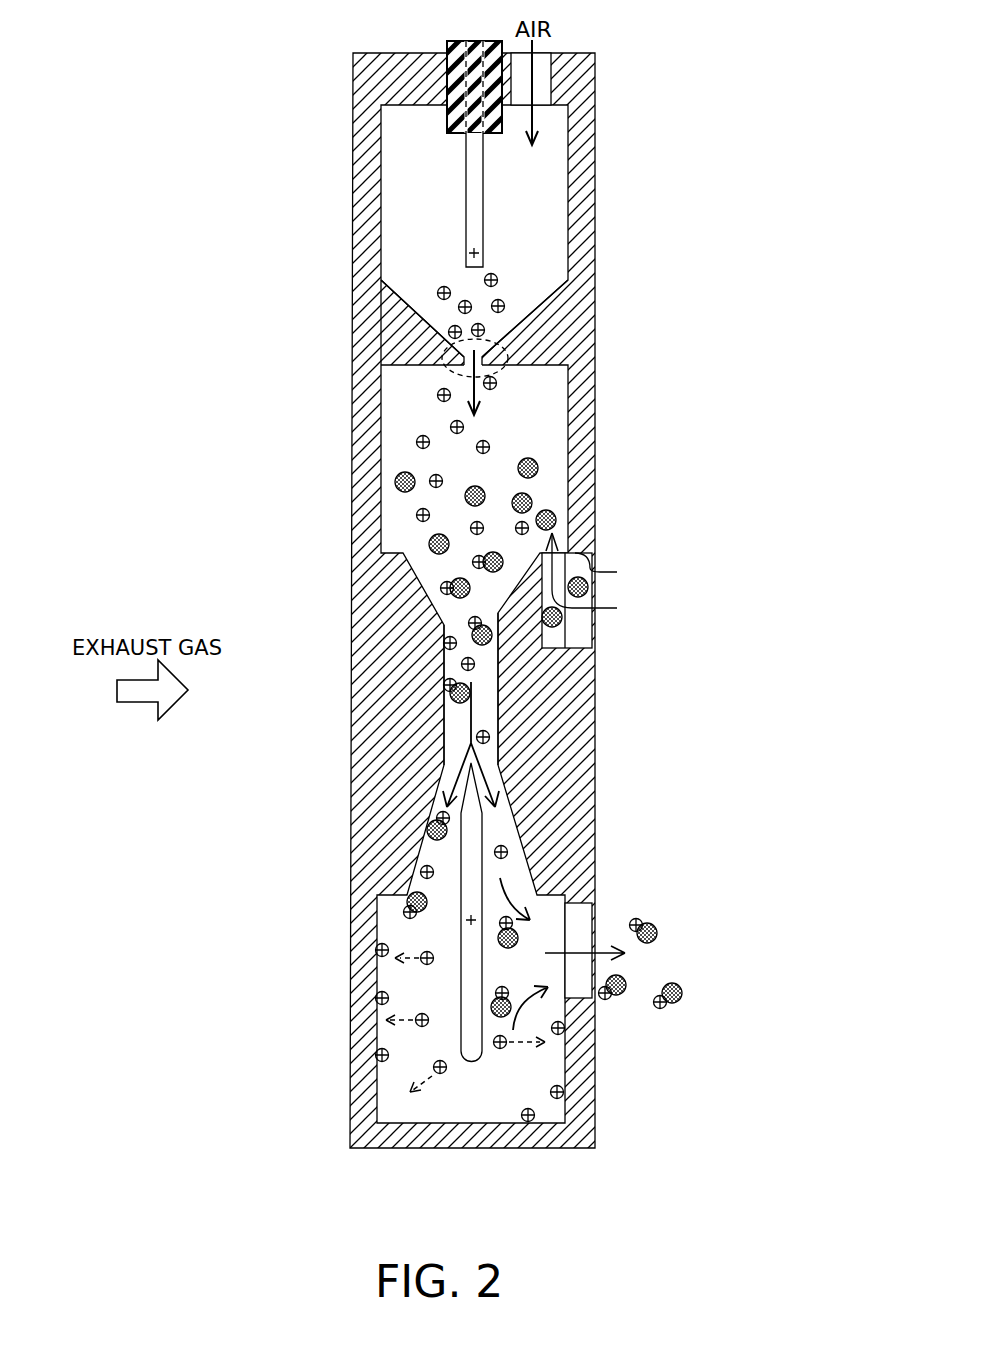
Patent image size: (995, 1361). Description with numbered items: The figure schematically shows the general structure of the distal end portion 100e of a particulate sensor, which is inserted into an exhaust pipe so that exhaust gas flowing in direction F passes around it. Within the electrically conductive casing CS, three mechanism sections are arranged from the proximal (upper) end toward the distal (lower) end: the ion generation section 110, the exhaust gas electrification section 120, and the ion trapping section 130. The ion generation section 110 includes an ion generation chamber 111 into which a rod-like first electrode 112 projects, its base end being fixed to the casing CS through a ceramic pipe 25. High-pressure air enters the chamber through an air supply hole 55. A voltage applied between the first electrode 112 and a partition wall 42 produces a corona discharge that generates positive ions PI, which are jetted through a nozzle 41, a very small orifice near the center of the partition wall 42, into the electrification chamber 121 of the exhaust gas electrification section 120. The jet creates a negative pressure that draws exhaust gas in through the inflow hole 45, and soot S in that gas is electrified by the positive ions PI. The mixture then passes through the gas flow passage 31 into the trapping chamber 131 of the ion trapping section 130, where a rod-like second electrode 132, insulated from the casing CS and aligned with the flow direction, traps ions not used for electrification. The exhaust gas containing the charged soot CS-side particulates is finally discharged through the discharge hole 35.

The distal end portion 100e is at (428, 594).
The ion generation section 110 is at (522, 227).
The ion generation chamber 111 is at (432, 165).
The first electrode 112 is at (502, 208).
The ceramic pipe 25 is at (447, 88).
The air supply hole 55 is at (553, 70).
The positive ions PI is at (438, 293).
The nozzle 41 is at (442, 356).
The partition wall 42 is at (532, 332).
The exhaust gas electrification section 120 is at (524, 565).
The electrification chamber 121 is at (432, 405).
The soot S is at (396, 482).
The inflow hole 45 is at (600, 590).
The gas flow passage 31 is at (448, 614).
The casing CS is at (563, 725).
The ion trapping section 130 is at (513, 886).
The trapping chamber 131 is at (488, 1105).
The second electrode 132 is at (434, 924).
The discharge hole 35 is at (577, 905).
The exhaust gas flow direction F is at (127, 695).